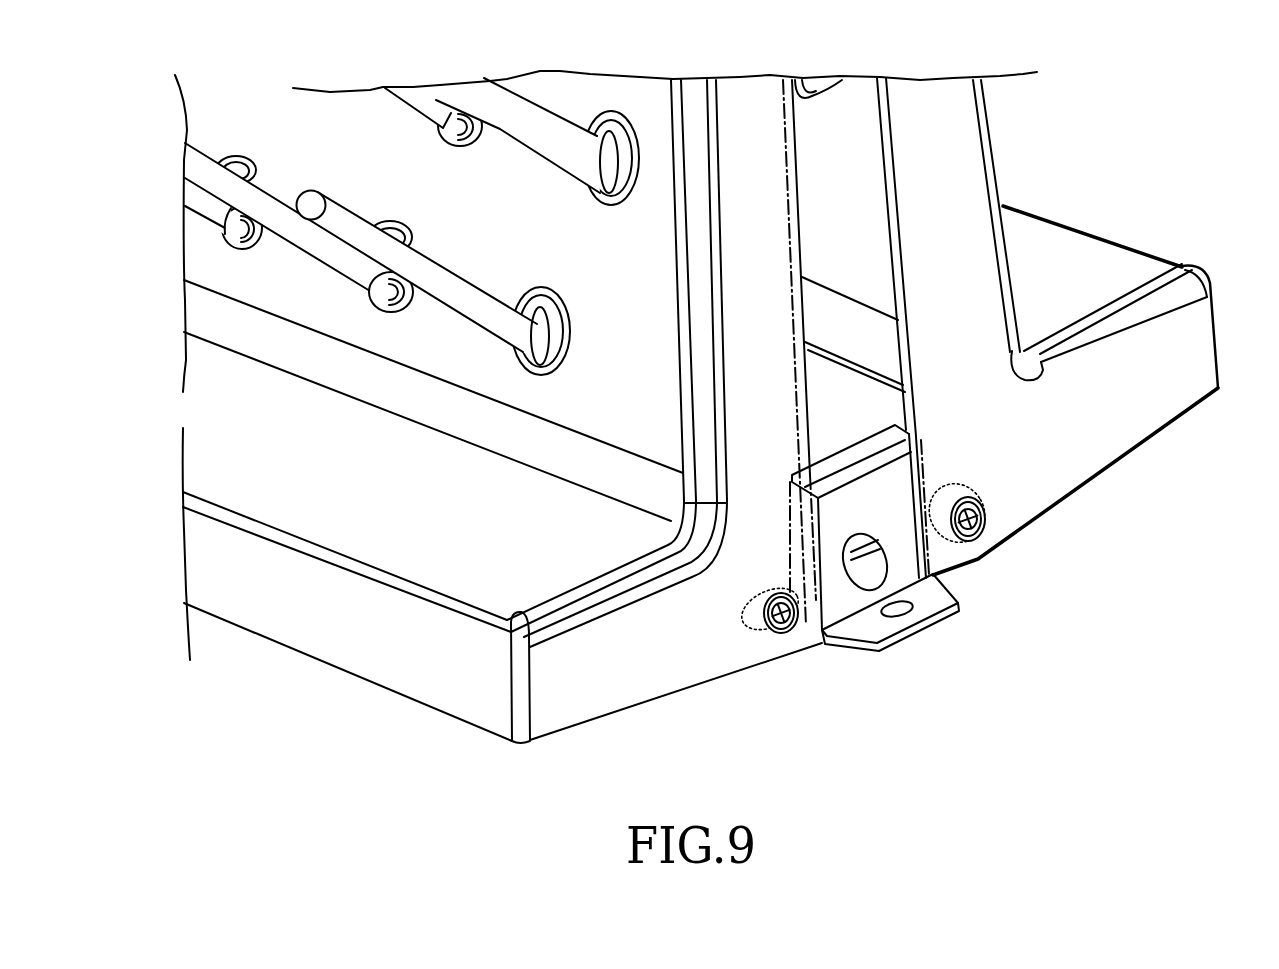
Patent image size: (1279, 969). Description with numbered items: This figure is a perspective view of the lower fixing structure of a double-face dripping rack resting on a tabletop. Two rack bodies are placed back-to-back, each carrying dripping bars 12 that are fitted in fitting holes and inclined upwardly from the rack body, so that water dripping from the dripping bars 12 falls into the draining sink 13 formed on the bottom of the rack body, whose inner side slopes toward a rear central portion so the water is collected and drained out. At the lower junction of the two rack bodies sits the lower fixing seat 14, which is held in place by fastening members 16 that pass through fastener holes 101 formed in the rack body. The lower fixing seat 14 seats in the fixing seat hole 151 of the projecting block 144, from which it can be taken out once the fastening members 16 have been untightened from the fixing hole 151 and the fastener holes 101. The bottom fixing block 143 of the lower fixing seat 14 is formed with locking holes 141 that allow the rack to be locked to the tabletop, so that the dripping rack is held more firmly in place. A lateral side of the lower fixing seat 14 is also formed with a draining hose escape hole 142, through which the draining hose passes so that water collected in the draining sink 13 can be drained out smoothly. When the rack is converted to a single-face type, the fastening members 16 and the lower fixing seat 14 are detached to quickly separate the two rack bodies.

The dripping bar 12 is at (492, 280).
The draining sink 13 is at (436, 587).
The lower fixing seat 14 is at (855, 615).
The fastening member 16 is at (765, 617).
The fastener hole 101 is at (800, 620).
The locking hole 141 is at (947, 612).
The draining hose escape hole 142 is at (885, 536).
The bottom fixing block 143 is at (959, 612).
The projecting block 144 is at (967, 496).
The fixing hole 151 is at (938, 483).